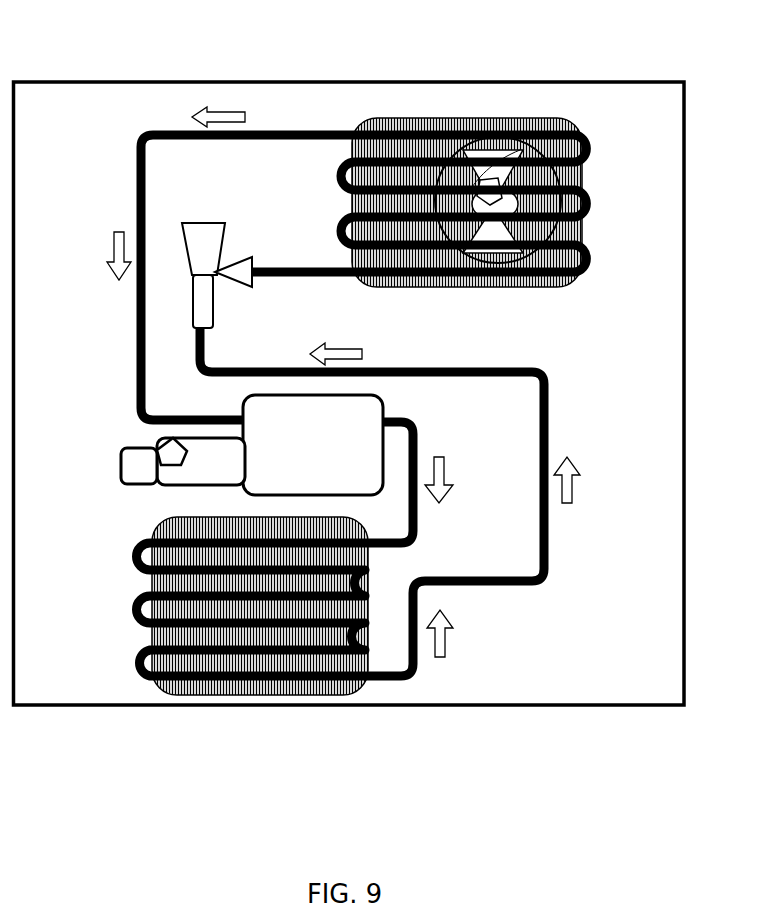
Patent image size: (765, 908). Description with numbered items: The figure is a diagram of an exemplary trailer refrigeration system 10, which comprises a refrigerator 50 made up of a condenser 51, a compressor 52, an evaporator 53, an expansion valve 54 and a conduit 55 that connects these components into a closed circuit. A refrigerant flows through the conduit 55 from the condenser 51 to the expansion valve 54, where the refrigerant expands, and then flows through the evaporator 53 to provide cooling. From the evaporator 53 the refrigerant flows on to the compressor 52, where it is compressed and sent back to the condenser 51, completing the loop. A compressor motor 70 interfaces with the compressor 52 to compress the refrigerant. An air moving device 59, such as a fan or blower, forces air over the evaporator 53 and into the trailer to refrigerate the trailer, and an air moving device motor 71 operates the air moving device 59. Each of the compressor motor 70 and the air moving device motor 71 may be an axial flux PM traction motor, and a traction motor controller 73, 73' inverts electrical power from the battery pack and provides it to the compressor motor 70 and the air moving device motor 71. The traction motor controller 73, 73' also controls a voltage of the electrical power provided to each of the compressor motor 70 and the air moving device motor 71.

The refrigeration system 10 is at (260, 63).
The refrigerator 50 is at (146, 80).
The condenser 51 is at (232, 700).
The compressor 52 is at (357, 412).
The evaporator 53 is at (545, 120).
The expansion valve 54 is at (222, 222).
The conduit 55 is at (552, 537).
The air moving device 59 is at (582, 232).
The compressor motor 70 is at (180, 472).
The air moving device motor 71 is at (580, 183).
The traction motor controller 73 is at (112, 441).
The traction motor controller 73' is at (544, 150).